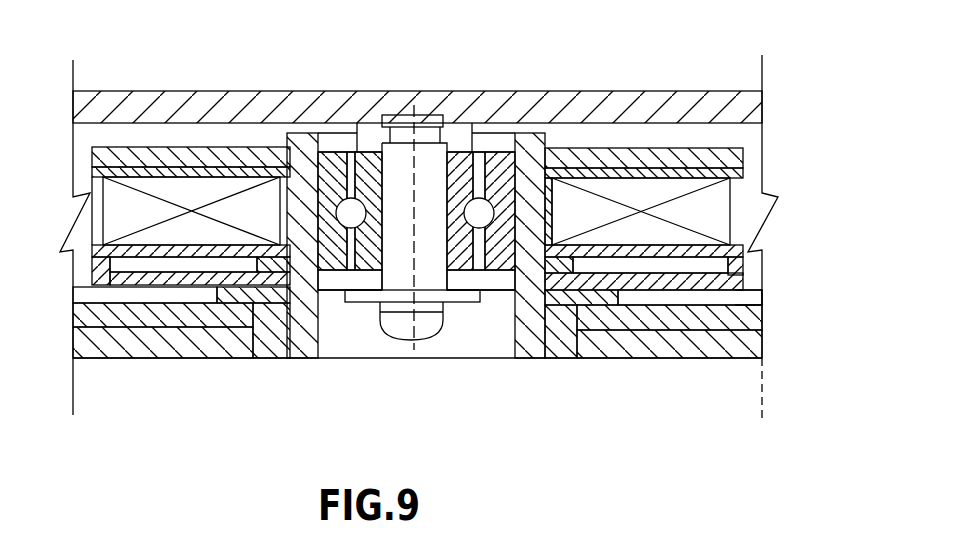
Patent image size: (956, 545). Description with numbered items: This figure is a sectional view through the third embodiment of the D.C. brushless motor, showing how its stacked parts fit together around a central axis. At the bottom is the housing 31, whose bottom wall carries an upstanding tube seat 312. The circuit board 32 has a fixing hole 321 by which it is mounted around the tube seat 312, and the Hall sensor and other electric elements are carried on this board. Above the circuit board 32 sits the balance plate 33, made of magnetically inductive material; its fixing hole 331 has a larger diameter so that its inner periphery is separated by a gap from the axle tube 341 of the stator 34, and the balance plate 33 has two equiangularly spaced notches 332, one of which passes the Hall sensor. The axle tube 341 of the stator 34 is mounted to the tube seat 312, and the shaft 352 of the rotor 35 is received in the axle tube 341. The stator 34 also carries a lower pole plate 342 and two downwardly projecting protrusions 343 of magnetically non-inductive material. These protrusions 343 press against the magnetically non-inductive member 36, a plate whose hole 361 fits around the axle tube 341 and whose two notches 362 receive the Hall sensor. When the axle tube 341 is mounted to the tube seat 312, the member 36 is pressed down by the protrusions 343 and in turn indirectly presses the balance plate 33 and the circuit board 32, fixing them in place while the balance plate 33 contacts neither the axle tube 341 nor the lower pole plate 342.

The housing 31 is at (150, 347).
The tube seat 312 is at (268, 313).
The circuit board 32 is at (758, 322).
The fixing hole 321 is at (535, 298).
The balance plate 33 is at (599, 292).
The fixing hole 331 is at (527, 340).
The notches 332 is at (660, 292).
The stator 34 is at (733, 193).
The axle tube 341 is at (308, 350).
The lower pole plate 342 is at (589, 147).
The protrusions 343 is at (747, 271).
The rotor 35 is at (269, 96).
The shaft 352 is at (391, 267).
The magnetically non-inductive member 36 is at (683, 300).
The hole 361 is at (292, 270).
The notches 362 is at (740, 292).